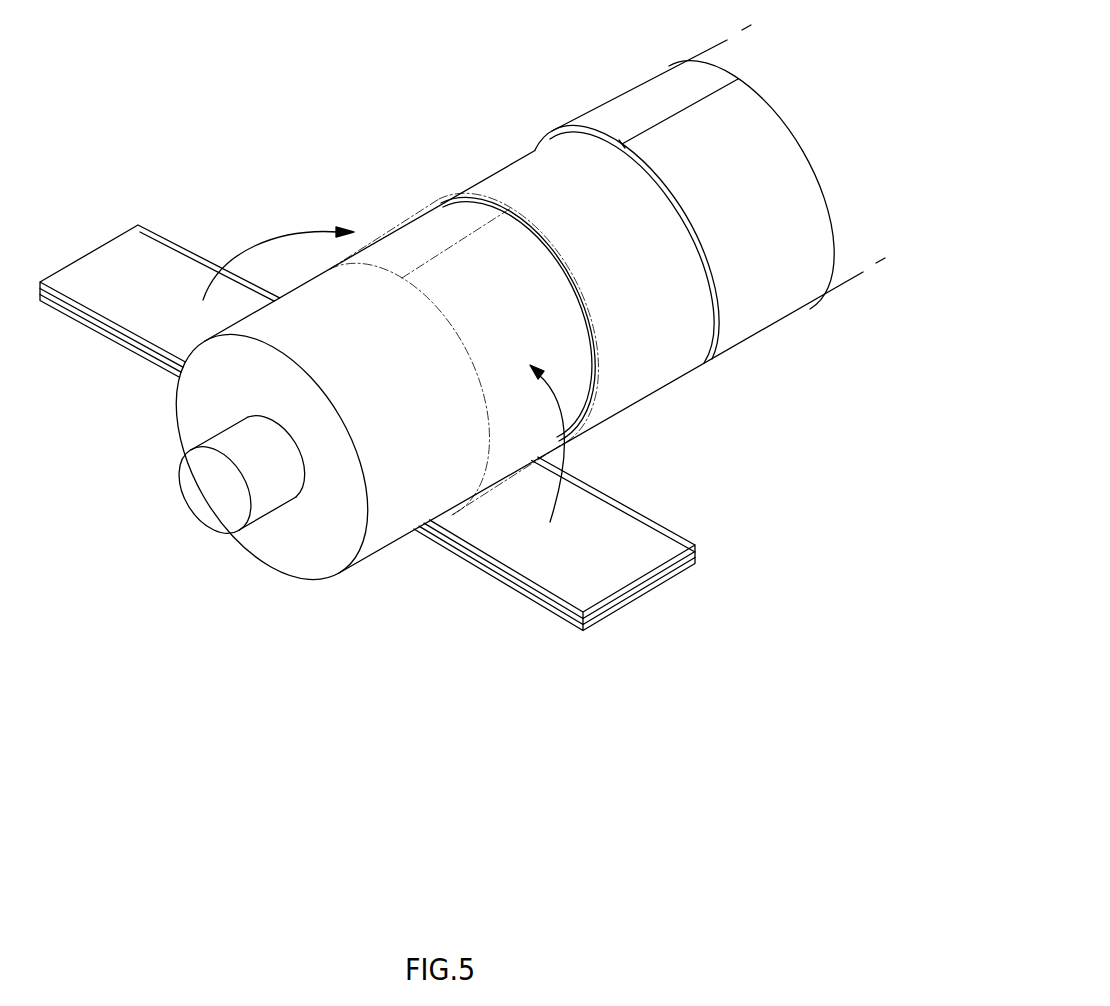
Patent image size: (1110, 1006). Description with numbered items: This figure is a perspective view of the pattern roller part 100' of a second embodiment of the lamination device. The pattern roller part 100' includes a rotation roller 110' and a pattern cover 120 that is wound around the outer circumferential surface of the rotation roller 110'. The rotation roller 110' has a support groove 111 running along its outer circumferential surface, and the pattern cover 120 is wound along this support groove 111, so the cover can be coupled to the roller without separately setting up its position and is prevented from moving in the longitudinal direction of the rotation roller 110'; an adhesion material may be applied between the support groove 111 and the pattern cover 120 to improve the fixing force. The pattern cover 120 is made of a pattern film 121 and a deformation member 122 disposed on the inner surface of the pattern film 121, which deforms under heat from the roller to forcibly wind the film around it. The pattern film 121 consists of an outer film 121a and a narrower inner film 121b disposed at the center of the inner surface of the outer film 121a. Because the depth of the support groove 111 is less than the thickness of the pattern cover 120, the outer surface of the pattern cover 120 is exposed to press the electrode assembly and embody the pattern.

The pattern roller part 100' is at (462, 420).
The rotation roller 110' is at (511, 319).
The support groove 111 is at (408, 247).
The pattern cover 120 is at (397, 523).
The pattern film 121 is at (397, 500).
The outer film 121a is at (663, 580).
The inner film 121b is at (633, 590).
The deformation member 122 is at (588, 617).